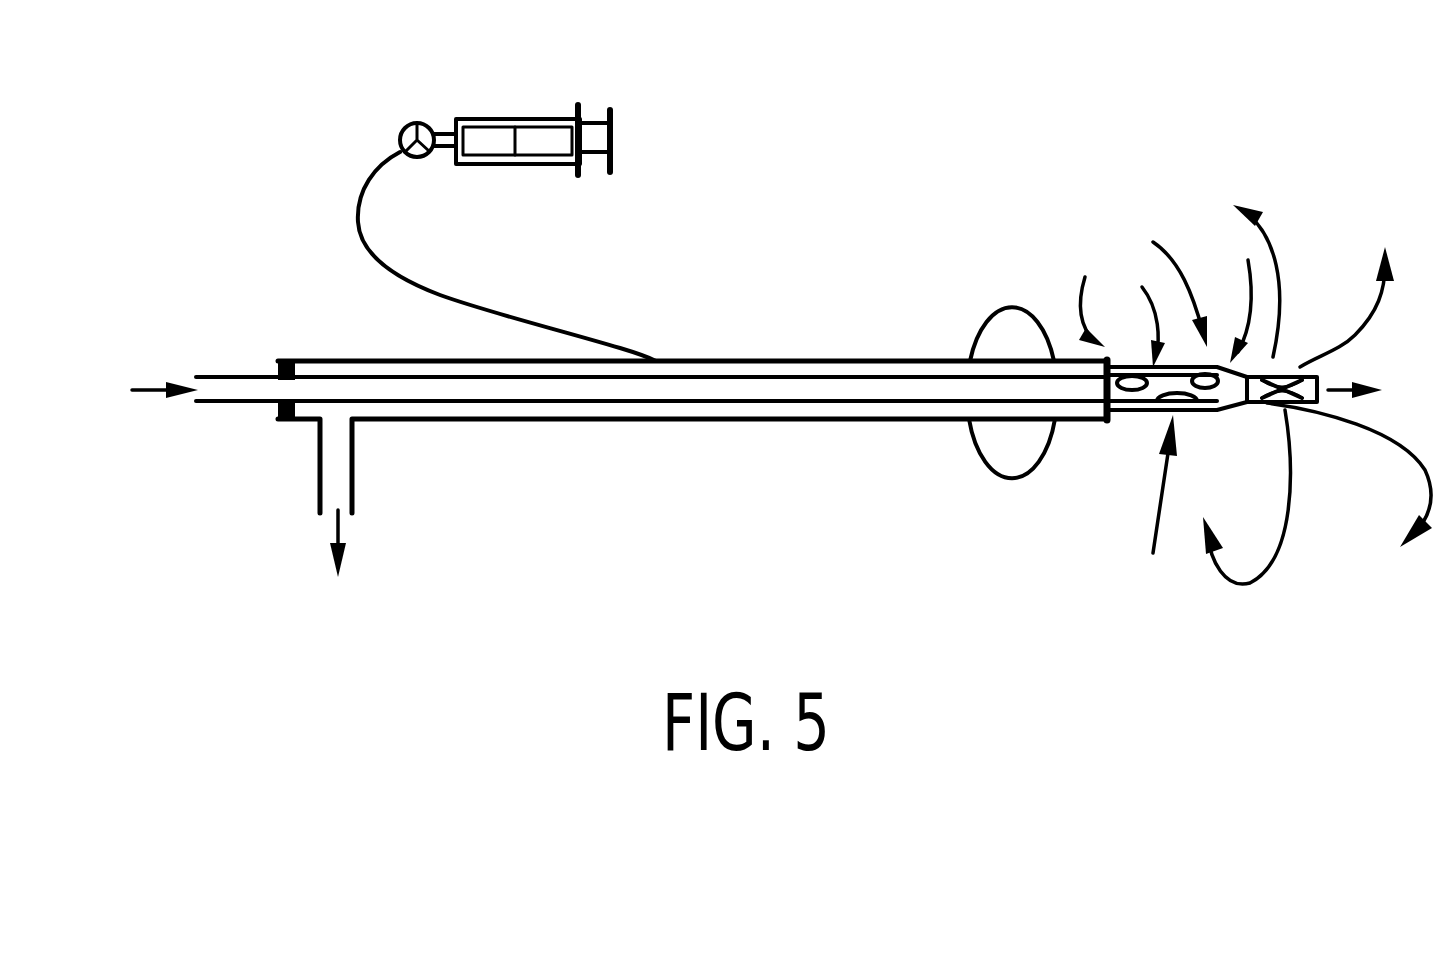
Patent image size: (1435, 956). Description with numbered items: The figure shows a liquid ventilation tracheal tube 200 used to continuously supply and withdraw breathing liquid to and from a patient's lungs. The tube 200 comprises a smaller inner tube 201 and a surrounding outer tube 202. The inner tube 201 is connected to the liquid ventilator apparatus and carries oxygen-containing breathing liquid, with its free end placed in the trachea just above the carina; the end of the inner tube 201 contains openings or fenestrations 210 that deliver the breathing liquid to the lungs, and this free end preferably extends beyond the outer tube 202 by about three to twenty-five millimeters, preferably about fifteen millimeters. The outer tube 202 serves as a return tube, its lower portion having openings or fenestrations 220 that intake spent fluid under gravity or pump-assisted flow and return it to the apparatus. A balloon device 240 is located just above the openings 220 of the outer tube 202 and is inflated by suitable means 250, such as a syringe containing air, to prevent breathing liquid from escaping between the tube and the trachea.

The liquid ventilation tracheal tube 200 is at (700, 258).
The inner tube 201 is at (492, 392).
The outer tube 202 is at (657, 420).
The openings or fenestrations 210 is at (1208, 375).
The openings or fenestrations 220 is at (1132, 391).
The balloon device 240 is at (977, 330).
The inflation means 250 is at (493, 164).